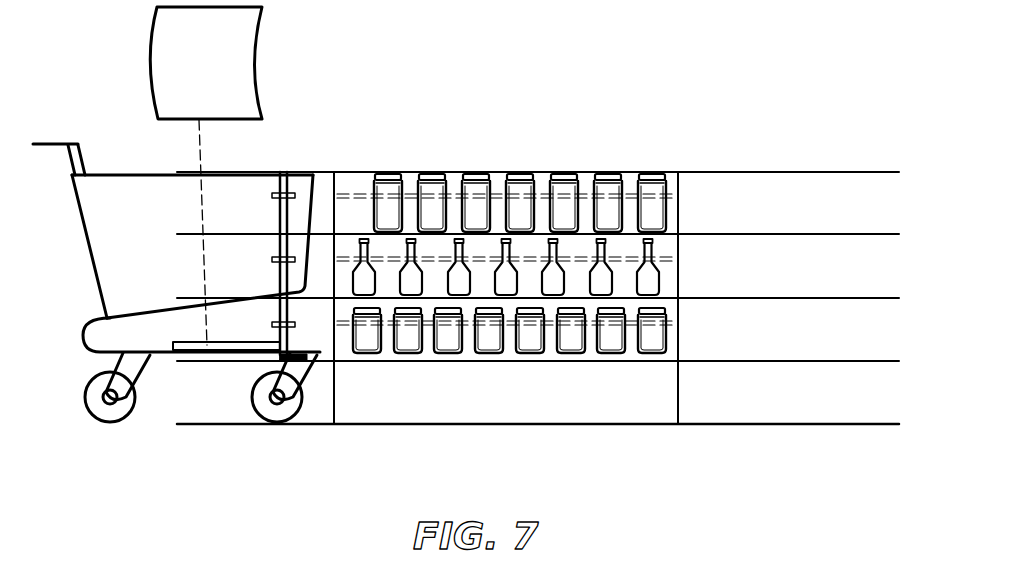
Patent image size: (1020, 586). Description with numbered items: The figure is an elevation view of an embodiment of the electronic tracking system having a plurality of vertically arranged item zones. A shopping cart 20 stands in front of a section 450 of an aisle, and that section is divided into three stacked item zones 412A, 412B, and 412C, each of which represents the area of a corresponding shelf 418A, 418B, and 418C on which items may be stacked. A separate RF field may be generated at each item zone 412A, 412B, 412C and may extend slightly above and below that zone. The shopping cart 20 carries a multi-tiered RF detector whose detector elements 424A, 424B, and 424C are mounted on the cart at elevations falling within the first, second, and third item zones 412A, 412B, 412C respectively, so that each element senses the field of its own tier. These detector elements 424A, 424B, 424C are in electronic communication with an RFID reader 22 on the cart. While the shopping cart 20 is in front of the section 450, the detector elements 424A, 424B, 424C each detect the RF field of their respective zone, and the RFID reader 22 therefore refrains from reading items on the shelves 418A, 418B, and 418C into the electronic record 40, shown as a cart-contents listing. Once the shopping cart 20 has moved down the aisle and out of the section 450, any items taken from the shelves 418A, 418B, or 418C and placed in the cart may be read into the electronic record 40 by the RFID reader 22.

The shopping cart 20 is at (75, 220).
The RFID reader 22 is at (195, 350).
The electronic record 40 is at (248, 77).
The detector element 424A is at (272, 323).
The detector element 424B is at (272, 259).
The detector element 424C is at (272, 195).
The first item zone 412A is at (692, 300).
The second item zone 412B is at (692, 237).
The third item zone 412C is at (692, 174).
The shelf 418A is at (373, 361).
The shelf 418B is at (473, 298).
The shelf 418C is at (560, 234).
The section of aisle 450 is at (677, 435).